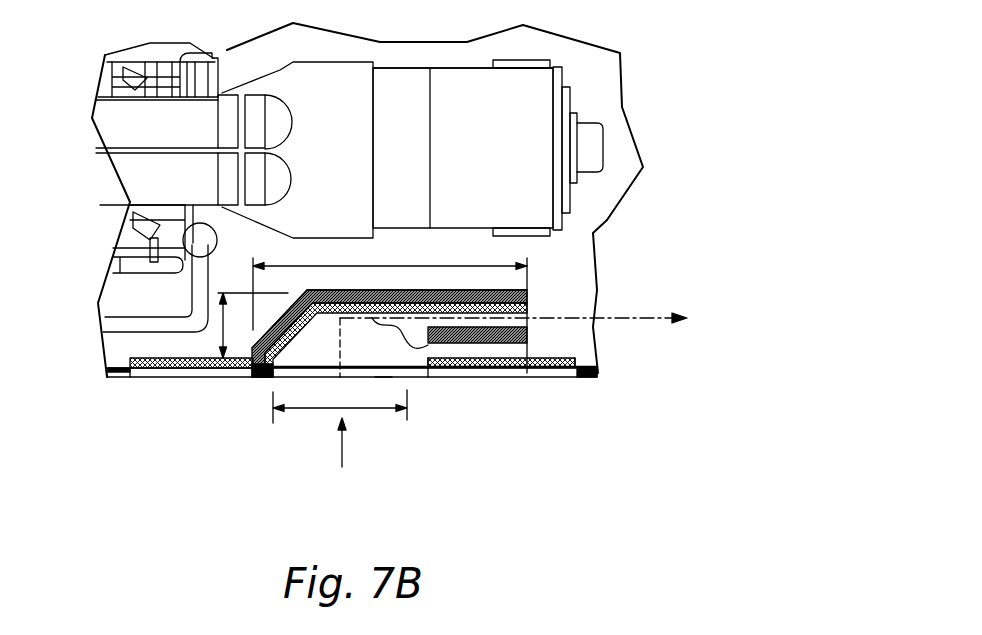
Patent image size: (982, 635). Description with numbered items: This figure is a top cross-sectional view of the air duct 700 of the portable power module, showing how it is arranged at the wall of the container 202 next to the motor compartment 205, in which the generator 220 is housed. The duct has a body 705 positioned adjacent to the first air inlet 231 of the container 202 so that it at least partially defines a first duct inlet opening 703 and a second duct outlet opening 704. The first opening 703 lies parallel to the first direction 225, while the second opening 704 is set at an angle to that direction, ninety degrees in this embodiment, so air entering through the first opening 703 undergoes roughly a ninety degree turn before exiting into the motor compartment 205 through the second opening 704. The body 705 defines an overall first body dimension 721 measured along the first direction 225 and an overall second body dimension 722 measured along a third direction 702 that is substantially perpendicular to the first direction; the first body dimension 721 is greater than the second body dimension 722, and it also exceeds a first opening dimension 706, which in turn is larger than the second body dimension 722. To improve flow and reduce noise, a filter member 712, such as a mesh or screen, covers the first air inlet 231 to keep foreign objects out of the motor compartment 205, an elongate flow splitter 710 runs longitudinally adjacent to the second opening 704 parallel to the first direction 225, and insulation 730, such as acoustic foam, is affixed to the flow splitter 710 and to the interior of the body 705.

The motor compartment 205 is at (593, 80).
The generator 220 is at (503, 130).
The first body dimension 721 is at (457, 264).
The body 705 is at (545, 300).
The air duct 700 is at (557, 280).
The second duct outlet opening 704 is at (527, 308).
The flow splitter 710 is at (527, 340).
The first direction 225 is at (640, 319).
The insulation 730 is at (340, 343).
The second body dimension 722 is at (220, 345).
The first air inlet 231 is at (270, 380).
The first opening dimension 706 is at (310, 410).
The third direction 702 is at (343, 447).
The filter member 712 is at (381, 380).
The first duct inlet opening 703 is at (402, 372).
The container 202 is at (533, 372).